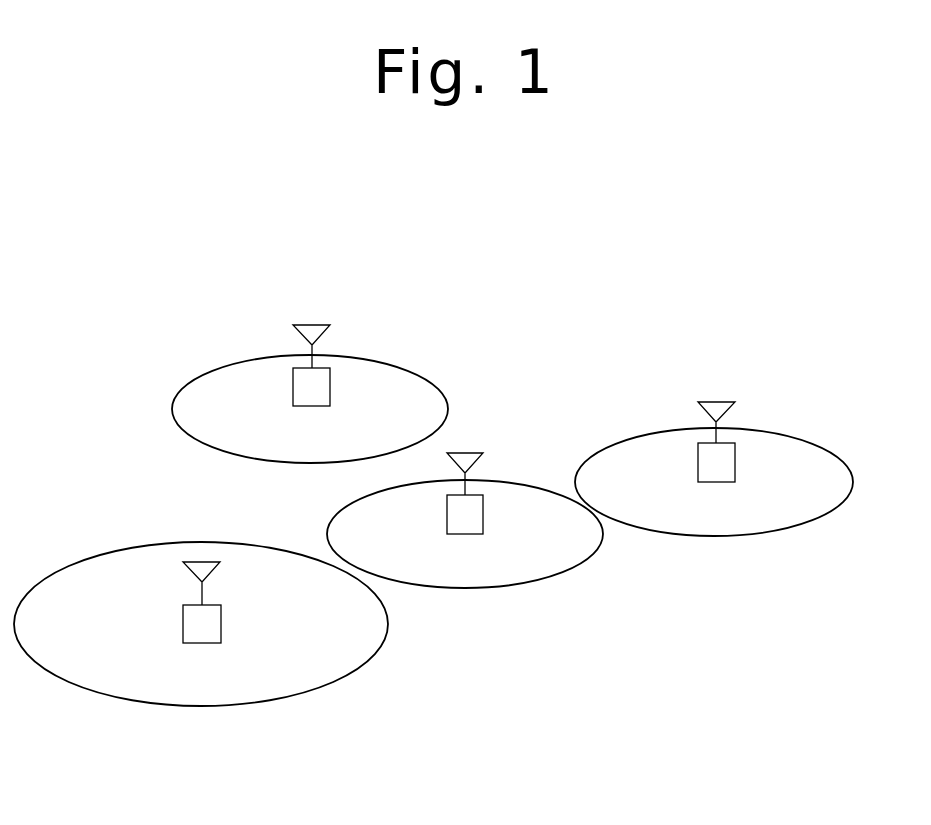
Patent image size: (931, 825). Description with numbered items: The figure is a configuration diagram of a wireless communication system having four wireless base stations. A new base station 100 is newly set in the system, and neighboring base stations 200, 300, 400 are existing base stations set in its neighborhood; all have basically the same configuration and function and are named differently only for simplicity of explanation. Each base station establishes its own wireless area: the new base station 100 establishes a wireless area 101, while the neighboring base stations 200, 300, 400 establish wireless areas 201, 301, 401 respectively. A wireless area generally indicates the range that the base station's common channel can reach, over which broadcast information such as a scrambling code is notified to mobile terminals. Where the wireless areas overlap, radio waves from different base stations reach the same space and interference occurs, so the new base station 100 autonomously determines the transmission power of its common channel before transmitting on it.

The new base station 100 is at (484, 510).
The wireless area 101 is at (530, 585).
The neighboring base station 200 is at (291, 386).
The wireless area 201 is at (442, 387).
The neighboring base station 300 is at (183, 623).
The wireless area 301 is at (360, 668).
The neighboring base station 400 is at (736, 460).
The wireless area 401 is at (780, 532).